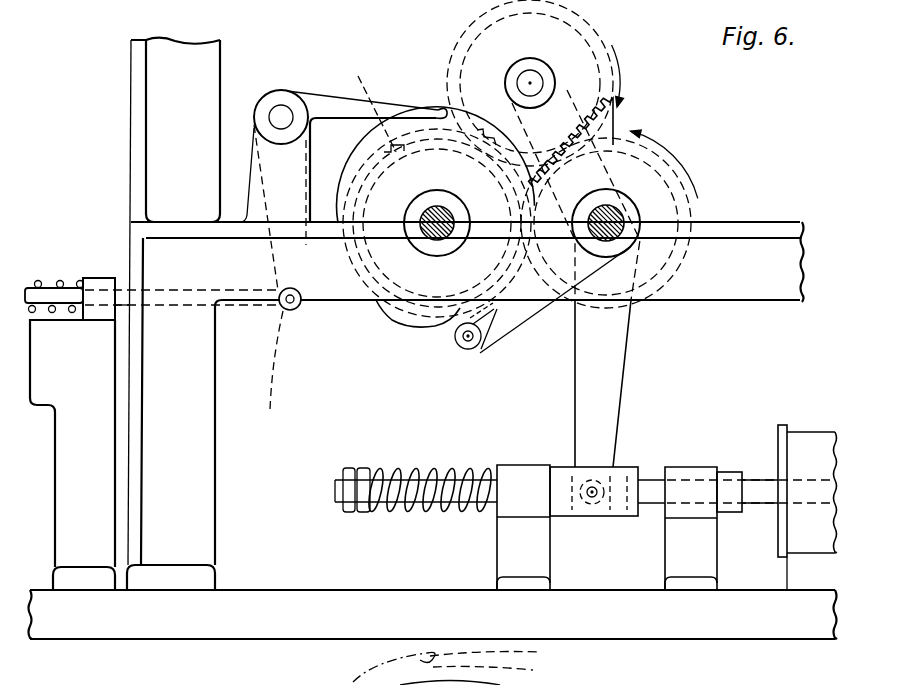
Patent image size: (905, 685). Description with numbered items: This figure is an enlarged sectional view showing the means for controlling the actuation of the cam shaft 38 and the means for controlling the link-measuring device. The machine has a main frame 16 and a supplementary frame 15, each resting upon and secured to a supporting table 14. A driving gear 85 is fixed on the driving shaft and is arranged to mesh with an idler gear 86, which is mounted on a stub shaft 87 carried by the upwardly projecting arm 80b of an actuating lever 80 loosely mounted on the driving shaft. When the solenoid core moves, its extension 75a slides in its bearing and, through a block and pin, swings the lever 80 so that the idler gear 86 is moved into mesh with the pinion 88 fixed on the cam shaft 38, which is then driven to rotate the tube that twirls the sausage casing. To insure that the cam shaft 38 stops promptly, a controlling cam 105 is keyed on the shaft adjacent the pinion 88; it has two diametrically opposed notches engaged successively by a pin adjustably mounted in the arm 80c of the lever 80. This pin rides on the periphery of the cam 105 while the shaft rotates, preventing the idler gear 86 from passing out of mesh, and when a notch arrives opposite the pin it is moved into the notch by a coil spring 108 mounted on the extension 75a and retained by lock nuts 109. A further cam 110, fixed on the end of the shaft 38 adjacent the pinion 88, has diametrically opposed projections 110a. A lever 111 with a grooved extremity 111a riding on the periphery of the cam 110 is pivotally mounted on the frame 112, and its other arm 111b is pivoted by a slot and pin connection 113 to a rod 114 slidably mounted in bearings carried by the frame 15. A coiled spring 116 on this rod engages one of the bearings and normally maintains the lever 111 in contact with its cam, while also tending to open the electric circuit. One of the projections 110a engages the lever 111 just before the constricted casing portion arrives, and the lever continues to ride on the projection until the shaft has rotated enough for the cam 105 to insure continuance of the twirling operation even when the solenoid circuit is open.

The supporting table 14 is at (276, 620).
The supplementary frame 15 is at (85, 478).
The main frame 16 is at (196, 466).
The cam shaft 38 is at (437, 232).
The extension of the magnetic core 75a is at (651, 488).
The actuating lever 80 is at (620, 315).
The upwardly projecting arm of the lever 80b is at (568, 120).
The arm of the lever 80c is at (536, 309).
The driving gear 85 is at (658, 183).
The idler gear 86 is at (578, 34).
The stub shaft 87 is at (536, 82).
The pinion 88 is at (496, 333).
The controlling cam 105 is at (373, 107).
The coil spring 108 is at (455, 466).
The lock nuts 109 is at (364, 466).
The cam 110 is at (363, 166).
The projections 110a is at (390, 142).
The lever 111 is at (335, 104).
The grooved extremity 111a is at (432, 114).
The arm of the lever 111b is at (293, 193).
The frame 112 is at (290, 142).
The slot and pin connection 113 is at (279, 281).
The rod 114 is at (117, 278).
The coiled spring 116 is at (54, 284).